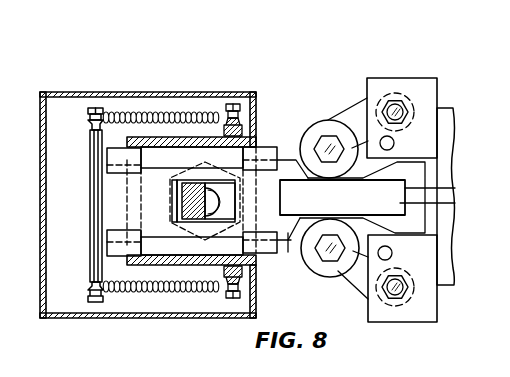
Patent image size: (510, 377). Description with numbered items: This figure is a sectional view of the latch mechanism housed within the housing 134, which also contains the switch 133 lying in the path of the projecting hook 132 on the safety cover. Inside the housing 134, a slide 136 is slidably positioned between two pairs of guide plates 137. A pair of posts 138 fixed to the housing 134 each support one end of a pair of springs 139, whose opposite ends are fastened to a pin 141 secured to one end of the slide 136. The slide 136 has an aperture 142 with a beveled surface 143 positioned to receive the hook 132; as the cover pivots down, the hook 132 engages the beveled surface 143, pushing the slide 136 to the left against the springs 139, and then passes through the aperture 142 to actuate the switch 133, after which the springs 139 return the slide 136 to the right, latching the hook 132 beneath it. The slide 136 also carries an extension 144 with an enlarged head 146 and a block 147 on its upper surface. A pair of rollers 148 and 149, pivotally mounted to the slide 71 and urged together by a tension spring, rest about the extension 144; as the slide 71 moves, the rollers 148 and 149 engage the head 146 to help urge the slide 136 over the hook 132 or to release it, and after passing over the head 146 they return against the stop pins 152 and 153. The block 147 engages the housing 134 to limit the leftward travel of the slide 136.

The slide 71 is at (445, 107).
The projecting hook 132 is at (189, 219).
The switch 133 is at (192, 165).
The housing 134 is at (131, 182).
The slide 136 is at (286, 246).
The guide plates 137 is at (149, 113).
The posts 138 is at (225, 107).
The springs 139 is at (161, 97).
The pin 141 is at (91, 198).
The aperture 142 is at (200, 171).
The beveled surface 143 is at (178, 205).
The extension 144 is at (306, 177).
The enlarged head 146 is at (455, 184).
The block 147 is at (455, 206).
The roller 148 is at (312, 269).
The roller 149 is at (325, 120).
The stop pin 152 is at (392, 253).
The stop pin 153 is at (394, 143).